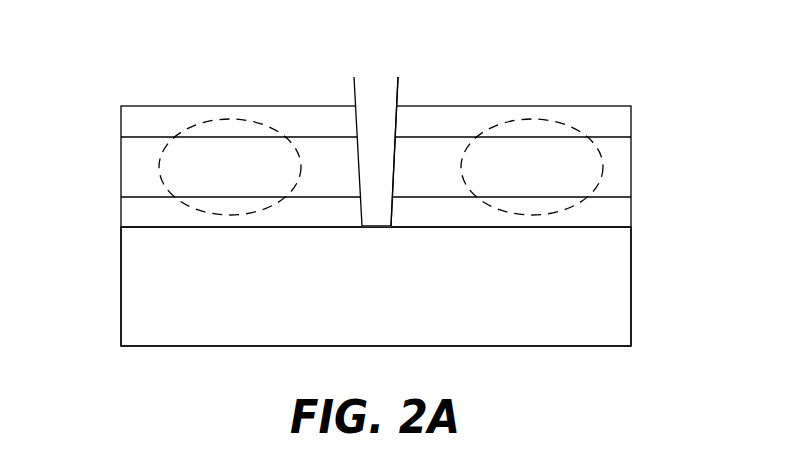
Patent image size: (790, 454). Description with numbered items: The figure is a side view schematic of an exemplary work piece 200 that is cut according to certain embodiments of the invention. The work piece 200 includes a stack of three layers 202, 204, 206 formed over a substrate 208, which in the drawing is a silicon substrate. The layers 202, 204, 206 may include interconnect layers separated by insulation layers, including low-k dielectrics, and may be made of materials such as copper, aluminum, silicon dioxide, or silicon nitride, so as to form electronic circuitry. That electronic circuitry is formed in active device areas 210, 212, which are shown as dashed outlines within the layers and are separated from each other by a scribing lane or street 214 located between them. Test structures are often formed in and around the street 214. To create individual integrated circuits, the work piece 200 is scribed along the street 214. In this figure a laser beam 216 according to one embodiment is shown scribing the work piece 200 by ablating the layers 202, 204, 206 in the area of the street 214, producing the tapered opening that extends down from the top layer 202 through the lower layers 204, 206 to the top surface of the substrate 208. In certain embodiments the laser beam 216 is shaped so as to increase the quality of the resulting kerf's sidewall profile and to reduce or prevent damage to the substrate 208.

The work piece 200 is at (171, 79).
The top layer 202 is at (631, 121).
The layer 204 is at (631, 164).
The layer 206 is at (631, 212).
The substrate 208 is at (631, 280).
The active device area 210 is at (251, 117).
The active device area 212 is at (529, 118).
The street 214 is at (408, 60).
The laser beam 216 is at (398, 93).